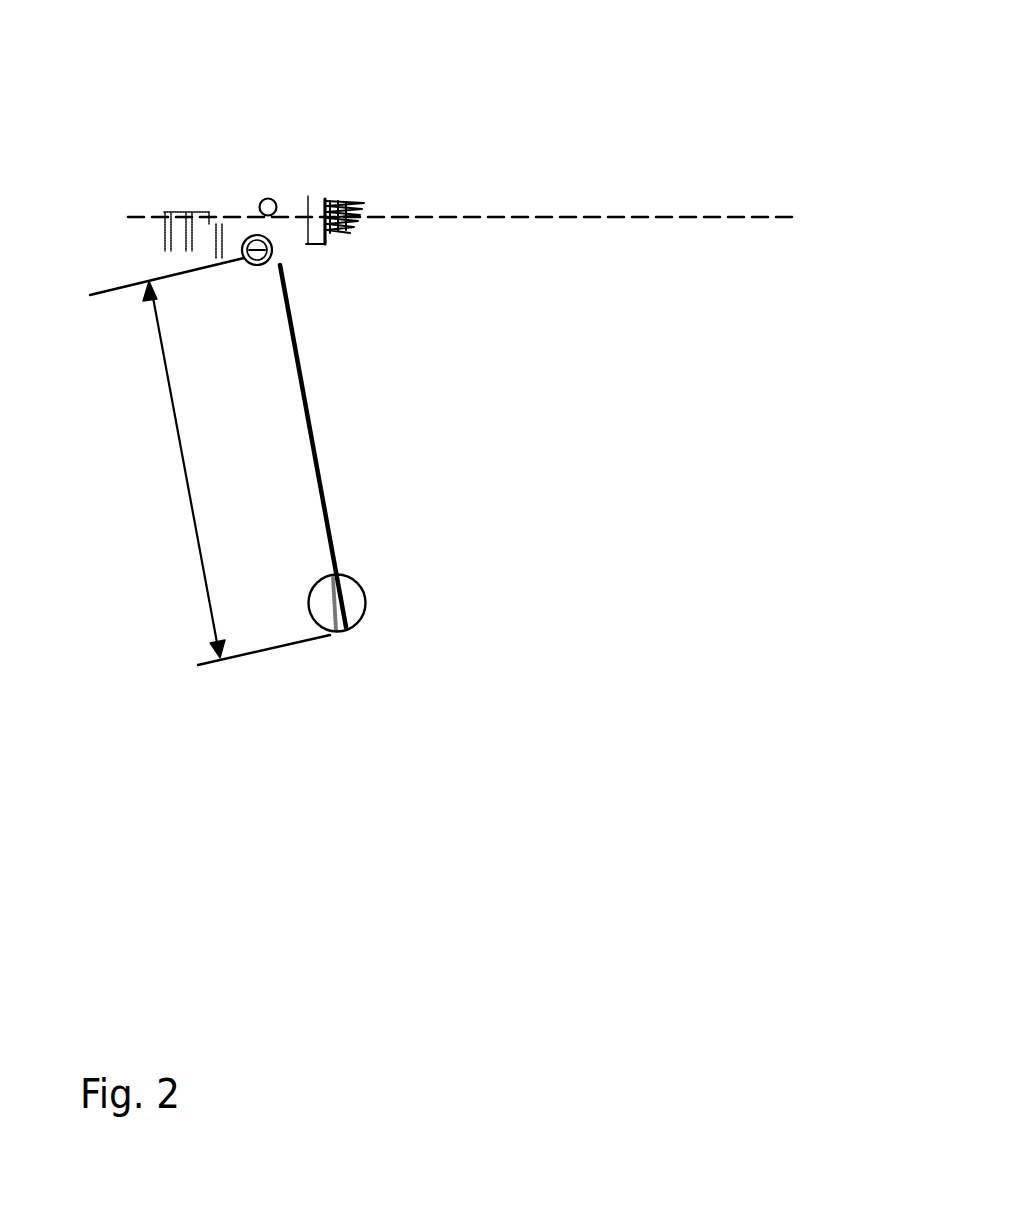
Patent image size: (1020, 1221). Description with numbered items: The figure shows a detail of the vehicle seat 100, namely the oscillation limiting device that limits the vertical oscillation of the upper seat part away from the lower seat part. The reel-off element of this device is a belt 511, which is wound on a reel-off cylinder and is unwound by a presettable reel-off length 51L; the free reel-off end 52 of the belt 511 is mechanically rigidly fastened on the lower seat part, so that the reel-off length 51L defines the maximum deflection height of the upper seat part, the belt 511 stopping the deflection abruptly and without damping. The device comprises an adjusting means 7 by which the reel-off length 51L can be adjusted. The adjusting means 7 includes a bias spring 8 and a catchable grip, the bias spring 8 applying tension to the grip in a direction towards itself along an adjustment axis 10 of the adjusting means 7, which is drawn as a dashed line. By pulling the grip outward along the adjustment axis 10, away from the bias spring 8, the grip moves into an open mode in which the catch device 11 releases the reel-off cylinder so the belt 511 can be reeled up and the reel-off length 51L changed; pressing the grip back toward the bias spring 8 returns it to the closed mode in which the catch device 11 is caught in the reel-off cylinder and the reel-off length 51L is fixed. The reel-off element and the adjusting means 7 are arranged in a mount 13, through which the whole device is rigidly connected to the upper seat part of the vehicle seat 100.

The adjustment axis 10 is at (483, 216).
The mount 13 is at (258, 205).
The adjusting means 7 is at (165, 228).
The bias spring 8 is at (358, 224).
The catch device 11 is at (272, 239).
The vehicle seat 100 is at (788, 341).
The belt 511 is at (302, 393).
The reel-off length 51L is at (210, 461).
The reel-off end 52 is at (341, 598).